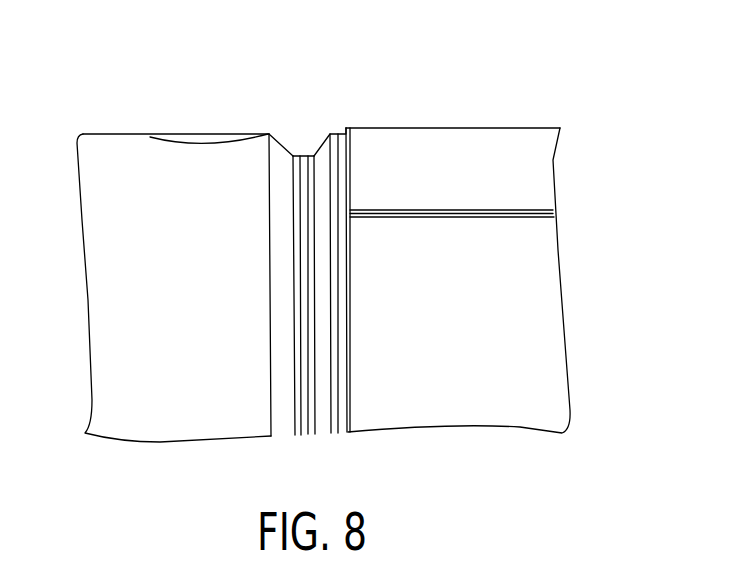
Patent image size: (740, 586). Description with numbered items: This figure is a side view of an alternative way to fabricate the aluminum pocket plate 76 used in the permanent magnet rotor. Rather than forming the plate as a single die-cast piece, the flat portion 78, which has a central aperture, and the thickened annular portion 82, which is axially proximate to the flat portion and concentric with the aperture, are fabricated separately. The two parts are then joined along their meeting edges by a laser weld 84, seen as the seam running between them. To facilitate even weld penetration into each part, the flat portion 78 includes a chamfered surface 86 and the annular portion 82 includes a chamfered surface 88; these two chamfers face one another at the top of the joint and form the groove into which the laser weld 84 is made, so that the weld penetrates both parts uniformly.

The pocket plate 76 is at (445, 103).
The flat portion 78 is at (542, 165).
The annular portion 82 is at (118, 327).
The laser weld 84 is at (293, 155).
The chamfered surface 86 is at (318, 182).
The chamfered surface 88 is at (283, 198).